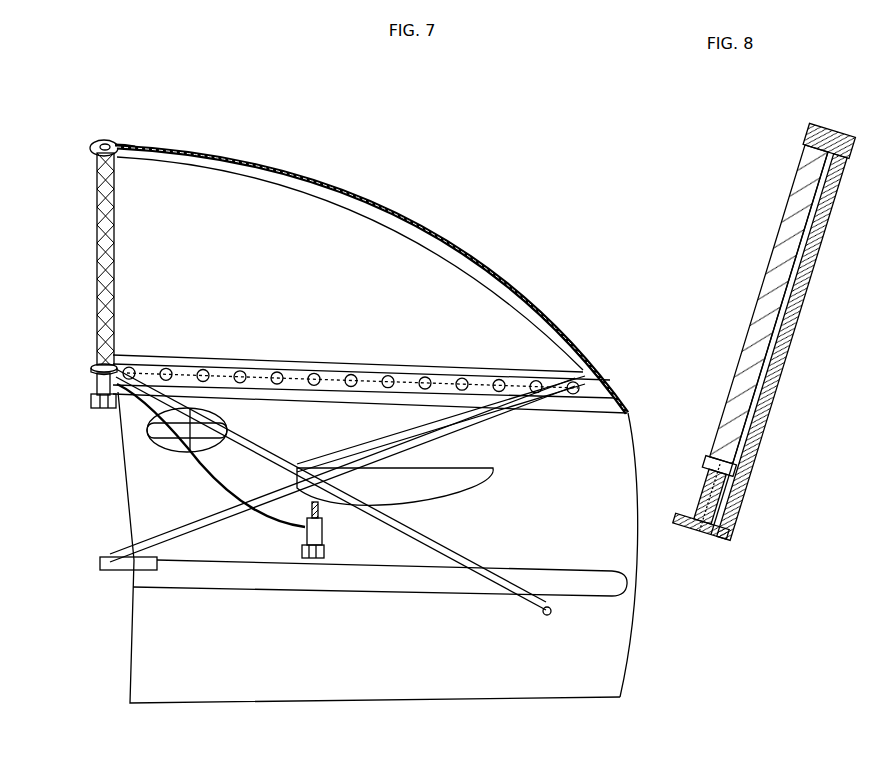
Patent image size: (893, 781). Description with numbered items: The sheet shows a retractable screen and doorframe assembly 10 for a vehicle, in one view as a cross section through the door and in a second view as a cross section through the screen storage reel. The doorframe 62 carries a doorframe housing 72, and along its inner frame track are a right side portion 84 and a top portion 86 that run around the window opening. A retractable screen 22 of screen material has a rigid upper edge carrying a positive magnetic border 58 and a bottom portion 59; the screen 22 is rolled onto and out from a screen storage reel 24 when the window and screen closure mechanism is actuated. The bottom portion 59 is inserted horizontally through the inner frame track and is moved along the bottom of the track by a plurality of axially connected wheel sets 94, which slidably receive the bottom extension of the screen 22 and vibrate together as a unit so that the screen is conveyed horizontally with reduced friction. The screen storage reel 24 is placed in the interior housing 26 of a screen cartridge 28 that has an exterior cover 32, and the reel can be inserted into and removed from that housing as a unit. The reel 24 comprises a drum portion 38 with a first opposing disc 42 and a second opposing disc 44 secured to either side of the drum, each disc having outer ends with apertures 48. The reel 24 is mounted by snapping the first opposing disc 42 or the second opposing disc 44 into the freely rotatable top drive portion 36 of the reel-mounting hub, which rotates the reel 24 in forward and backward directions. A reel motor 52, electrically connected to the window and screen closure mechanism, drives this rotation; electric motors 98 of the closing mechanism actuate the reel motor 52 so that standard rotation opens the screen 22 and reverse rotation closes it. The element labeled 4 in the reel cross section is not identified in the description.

In FIG. 7, the retractable screen and doorframe assembly 10 is at (380, 150).
In FIG. 7, the retractable screen 22 is at (97, 210).
In FIG. 7, the screen storage reel 24 is at (97, 252).
In FIG. 7, the first opposing disc 42 is at (108, 146).
In FIG. 8, the first opposing disc 42 is at (807, 143).
In FIG. 7, the apertures 48 is at (119, 150).
In FIG. 7, the positive magnetic border 58 is at (91, 150).
In FIG. 7, the second opposing disc 44 is at (95, 366).
In FIG. 8, the second opposing disc 44 is at (712, 457).
In FIG. 7, the reel motor 52 is at (95, 395).
In FIG. 7, the bottom portion 59 is at (124, 357).
In FIG. 7, the right side portion 84 is at (540, 327).
In FIG. 7, the top portion 86 is at (433, 237).
In FIG. 7, the wheel sets 94 is at (572, 400).
In FIG. 7, the electric motors 98 is at (420, 487).
In FIG. 7, the doorframe housing 72 is at (475, 657).
In FIG. 7, the doorframe 62 is at (630, 665).
In FIG. 8, the frame member 4 is at (773, 253).
In FIG. 8, the screen cartridge 28 is at (798, 355).
In FIG. 8, the top drive portion 36 is at (732, 473).
In FIG. 8, the drum portion 38 is at (748, 467).
In FIG. 8, the interior housing 26 is at (737, 537).
In FIG. 8, the exterior cover 32 is at (718, 545).